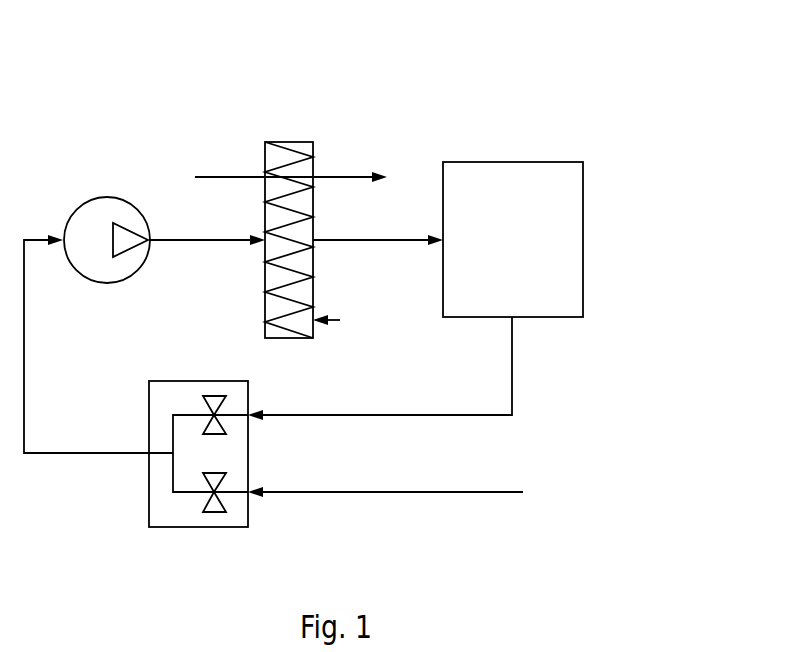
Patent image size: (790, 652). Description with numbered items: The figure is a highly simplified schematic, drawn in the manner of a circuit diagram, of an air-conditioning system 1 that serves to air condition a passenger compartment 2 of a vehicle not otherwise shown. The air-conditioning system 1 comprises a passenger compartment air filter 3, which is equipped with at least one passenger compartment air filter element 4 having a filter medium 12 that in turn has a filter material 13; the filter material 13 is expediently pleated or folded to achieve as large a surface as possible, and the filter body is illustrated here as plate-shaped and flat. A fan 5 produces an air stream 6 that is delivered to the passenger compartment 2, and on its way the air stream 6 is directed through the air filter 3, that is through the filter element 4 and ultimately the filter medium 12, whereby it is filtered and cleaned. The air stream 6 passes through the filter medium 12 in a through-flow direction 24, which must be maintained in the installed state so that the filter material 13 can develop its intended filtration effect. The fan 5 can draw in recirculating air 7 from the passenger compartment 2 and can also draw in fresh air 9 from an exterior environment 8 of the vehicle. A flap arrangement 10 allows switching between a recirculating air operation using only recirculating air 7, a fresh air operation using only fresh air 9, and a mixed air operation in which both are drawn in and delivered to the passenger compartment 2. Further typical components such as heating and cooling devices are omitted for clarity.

The air-conditioning system 1 is at (690, 147).
The passenger compartment 2 is at (513, 239).
The passenger compartment air filter 3 is at (274, 113).
The passenger compartment air filter element 4 is at (340, 320).
The fan 5 is at (107, 197).
The air stream 6 is at (166, 240).
The recirculating air 7 is at (362, 415).
The environment 8 is at (572, 489).
The fresh air 9 is at (412, 492).
The flap arrangement 10 is at (149, 486).
The filter medium 12 is at (278, 276).
The filter material 13 is at (278, 309).
The through-flow direction 24 is at (341, 177).